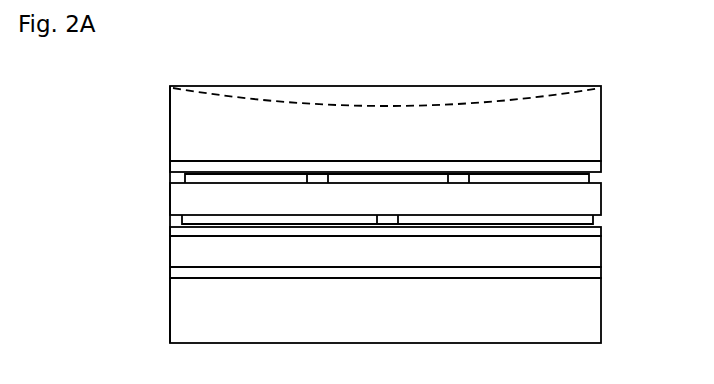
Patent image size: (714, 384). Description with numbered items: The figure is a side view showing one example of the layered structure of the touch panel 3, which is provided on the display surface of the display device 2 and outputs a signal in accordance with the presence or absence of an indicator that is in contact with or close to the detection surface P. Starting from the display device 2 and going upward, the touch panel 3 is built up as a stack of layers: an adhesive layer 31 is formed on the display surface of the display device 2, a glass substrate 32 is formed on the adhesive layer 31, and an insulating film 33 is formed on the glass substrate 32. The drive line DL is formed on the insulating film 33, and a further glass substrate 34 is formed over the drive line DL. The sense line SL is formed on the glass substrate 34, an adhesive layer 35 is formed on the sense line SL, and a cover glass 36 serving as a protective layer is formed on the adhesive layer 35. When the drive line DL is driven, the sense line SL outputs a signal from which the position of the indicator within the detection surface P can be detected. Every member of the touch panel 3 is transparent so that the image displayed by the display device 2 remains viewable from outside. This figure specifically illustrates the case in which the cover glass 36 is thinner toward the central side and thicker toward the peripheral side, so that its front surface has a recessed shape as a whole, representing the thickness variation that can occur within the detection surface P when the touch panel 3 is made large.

The display device 2 is at (160, 279).
The touch panel 3 is at (160, 86).
The adhesive layer 31 is at (593, 273).
The glass substrate 32 is at (593, 258).
The insulating film 33 is at (593, 235).
The glass substrate 34 is at (593, 198).
The adhesive layer 35 is at (590, 167).
The cover glass 36 is at (592, 129).
The sense line SL is at (592, 178).
The drive line DL is at (594, 219).
The detection surface P is at (388, 105).